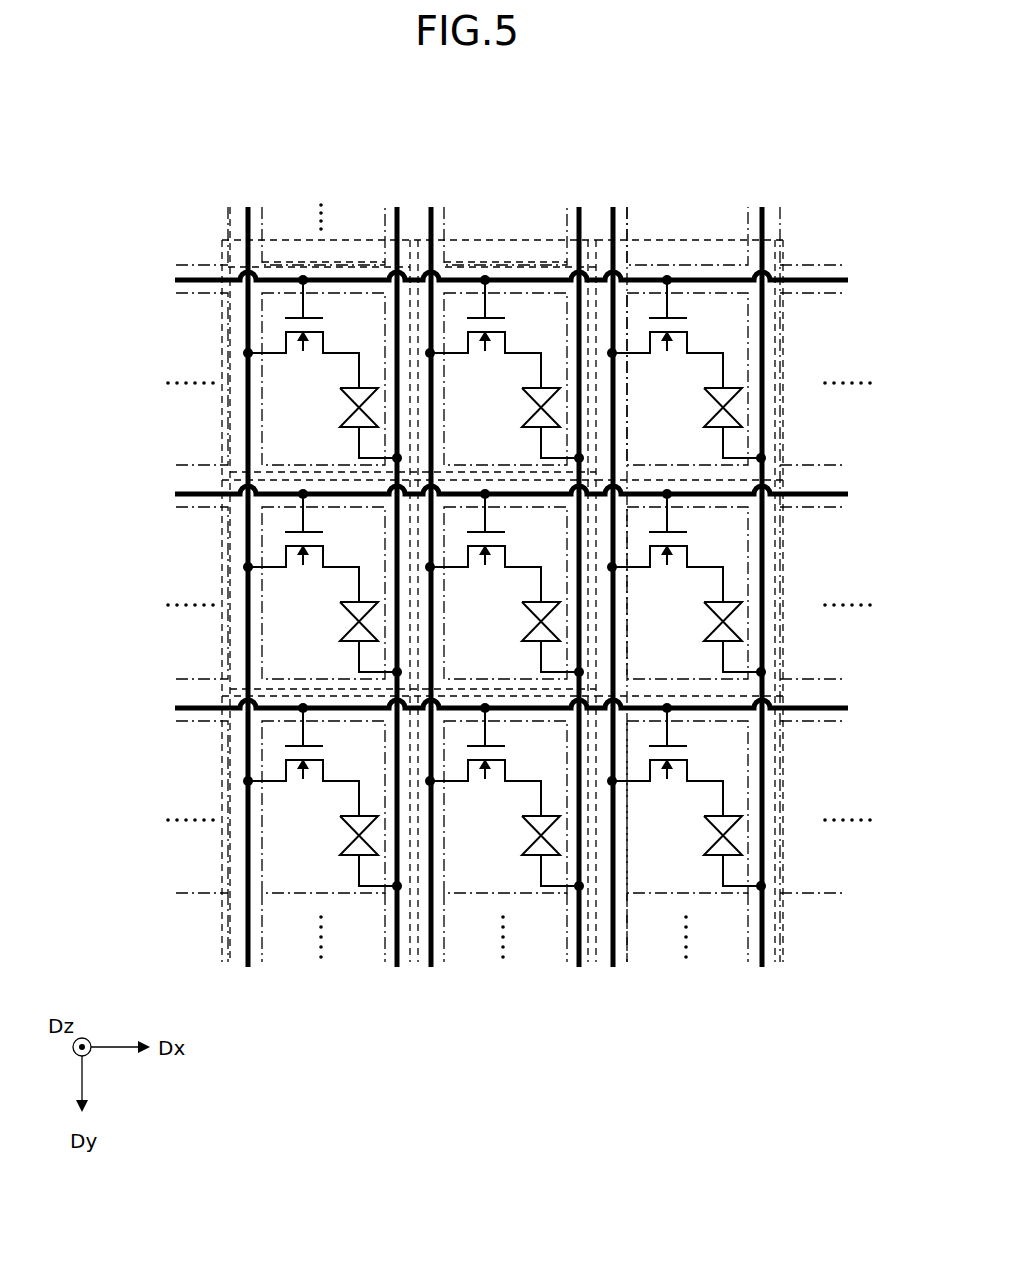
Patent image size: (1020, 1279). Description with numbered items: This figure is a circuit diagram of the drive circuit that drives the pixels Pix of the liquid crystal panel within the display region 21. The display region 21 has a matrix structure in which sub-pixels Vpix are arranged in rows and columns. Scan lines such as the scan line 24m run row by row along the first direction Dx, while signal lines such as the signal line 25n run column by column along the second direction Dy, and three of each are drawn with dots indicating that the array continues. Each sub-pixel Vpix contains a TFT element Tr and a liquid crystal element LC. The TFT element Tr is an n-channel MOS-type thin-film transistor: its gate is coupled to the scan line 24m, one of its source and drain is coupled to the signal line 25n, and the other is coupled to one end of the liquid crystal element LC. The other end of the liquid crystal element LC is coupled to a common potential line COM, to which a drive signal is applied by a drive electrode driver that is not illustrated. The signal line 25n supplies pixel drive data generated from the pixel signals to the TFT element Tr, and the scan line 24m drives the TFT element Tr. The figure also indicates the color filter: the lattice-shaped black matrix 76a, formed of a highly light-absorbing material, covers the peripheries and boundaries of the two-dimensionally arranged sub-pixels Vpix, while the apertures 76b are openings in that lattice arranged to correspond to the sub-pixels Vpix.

The display region 21 is at (768, 176).
The scan line 24m is at (216, 278).
The signal line 25n is at (248, 942).
The black matrix 76a is at (836, 265).
The aperture 76b is at (713, 306).
The TFT element Tr is at (664, 364).
The liquid crystal element LC is at (710, 408).
The pixel Pix is at (540, 240).
The sub-pixel Vpix is at (357, 262).
The common potential line COM is at (397, 937).